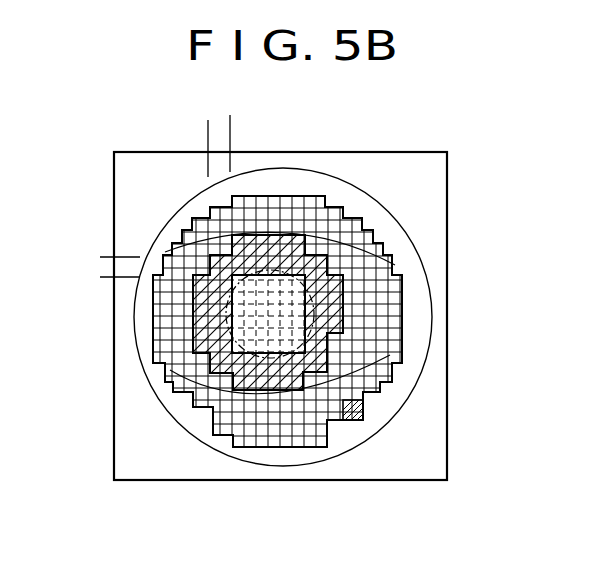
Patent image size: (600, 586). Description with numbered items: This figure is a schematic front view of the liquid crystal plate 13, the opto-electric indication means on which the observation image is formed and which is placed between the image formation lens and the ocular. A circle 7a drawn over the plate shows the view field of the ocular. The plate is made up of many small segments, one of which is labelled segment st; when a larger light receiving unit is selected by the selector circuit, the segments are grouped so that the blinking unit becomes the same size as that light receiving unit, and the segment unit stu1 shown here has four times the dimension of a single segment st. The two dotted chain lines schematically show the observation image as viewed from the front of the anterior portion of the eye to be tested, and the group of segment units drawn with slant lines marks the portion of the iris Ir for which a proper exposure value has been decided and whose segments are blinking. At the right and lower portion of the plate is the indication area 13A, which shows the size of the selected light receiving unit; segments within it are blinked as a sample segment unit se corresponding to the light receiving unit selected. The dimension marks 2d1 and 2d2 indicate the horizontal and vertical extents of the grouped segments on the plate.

The liquid crystal plate 13 is at (207, 480).
The circle 7a is at (431, 341).
The segment st is at (328, 197).
The segment unit stu1 is at (211, 257).
The iris Ir is at (212, 367).
The indication area 13A is at (365, 398).
The sample segment unit se is at (362, 419).
The horizontal offset 2d1 is at (253, 122).
The vertical offset 2d2 is at (120, 238).